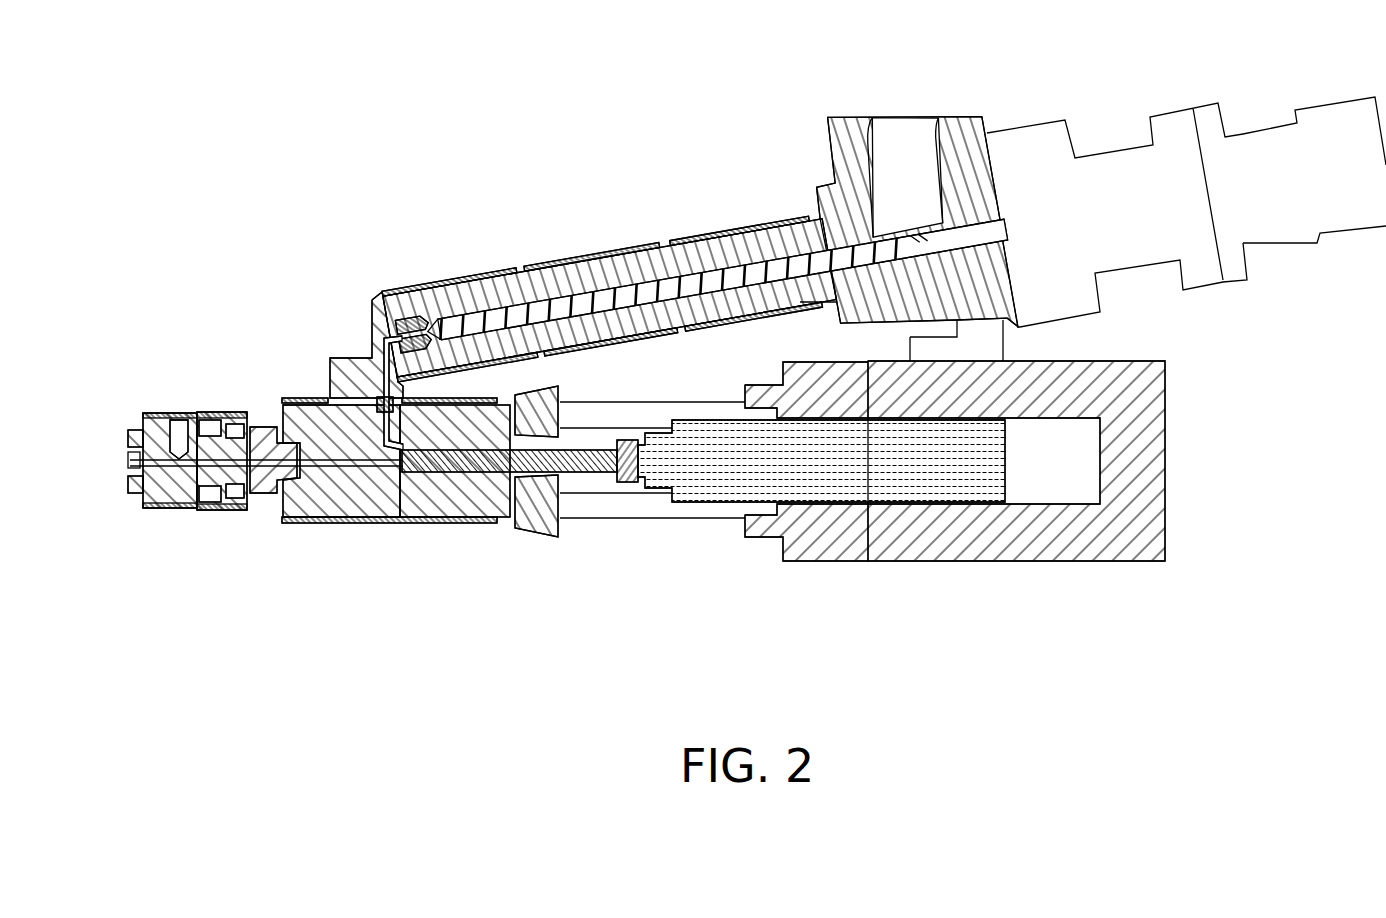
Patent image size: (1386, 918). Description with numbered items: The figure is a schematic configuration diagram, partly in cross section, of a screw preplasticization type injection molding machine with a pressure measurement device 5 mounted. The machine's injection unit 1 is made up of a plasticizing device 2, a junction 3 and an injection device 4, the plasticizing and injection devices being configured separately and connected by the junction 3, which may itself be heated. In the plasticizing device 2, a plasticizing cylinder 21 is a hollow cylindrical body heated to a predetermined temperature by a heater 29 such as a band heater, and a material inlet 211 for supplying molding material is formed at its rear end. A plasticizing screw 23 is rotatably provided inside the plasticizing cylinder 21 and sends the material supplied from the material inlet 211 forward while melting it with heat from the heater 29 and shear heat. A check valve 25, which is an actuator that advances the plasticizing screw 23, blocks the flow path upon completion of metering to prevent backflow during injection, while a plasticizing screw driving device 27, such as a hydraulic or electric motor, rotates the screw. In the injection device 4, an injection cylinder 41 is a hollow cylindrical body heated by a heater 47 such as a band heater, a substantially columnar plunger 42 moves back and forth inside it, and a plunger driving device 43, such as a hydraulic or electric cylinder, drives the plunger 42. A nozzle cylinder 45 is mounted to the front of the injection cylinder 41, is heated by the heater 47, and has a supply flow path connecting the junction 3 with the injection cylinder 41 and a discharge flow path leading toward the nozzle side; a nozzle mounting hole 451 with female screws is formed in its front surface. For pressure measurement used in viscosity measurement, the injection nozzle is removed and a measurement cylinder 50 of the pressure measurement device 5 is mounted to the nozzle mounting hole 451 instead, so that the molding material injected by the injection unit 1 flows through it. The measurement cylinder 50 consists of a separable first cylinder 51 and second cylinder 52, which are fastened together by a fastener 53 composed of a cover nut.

The injection unit 1 is at (200, 170).
The plasticizing device 2 is at (455, 240).
The plasticizing cylinder 21 is at (604, 269).
The material inlet 211 is at (911, 216).
The plasticizing screw 23 is at (709, 237).
The check valve 25 is at (1167, 115).
The plasticizing screw driving device 27 is at (1318, 110).
The heater 29 is at (598, 270).
The junction 3 is at (370, 307).
The injection device 4 is at (298, 575).
The injection cylinder 41 is at (410, 518).
The plunger 42 is at (595, 474).
The plunger driving device 43 is at (975, 562).
The nozzle cylinder 45 is at (335, 520).
The nozzle mounting hole 451 is at (278, 428).
The heater 47 is at (300, 394).
The pressure measurement device 5 is at (122, 384).
The measurement cylinder 50 is at (280, 560).
The first cylinder 51 is at (270, 496).
The second cylinder 52 is at (162, 510).
The fastener 53 is at (226, 512).